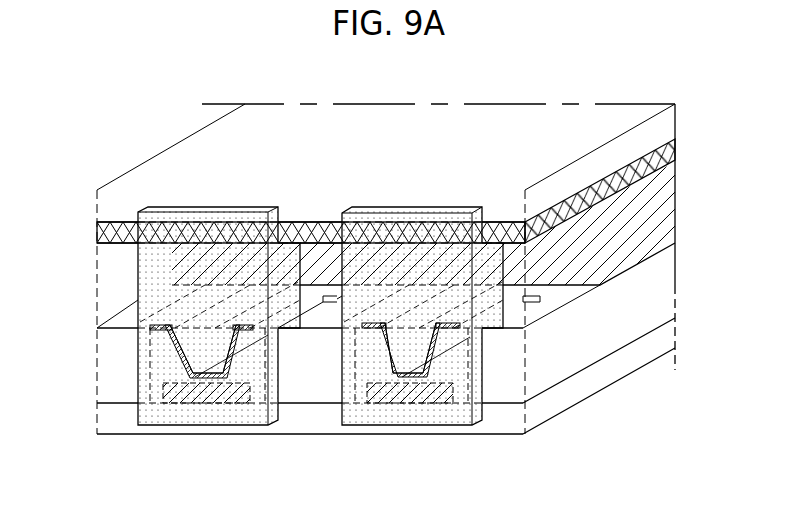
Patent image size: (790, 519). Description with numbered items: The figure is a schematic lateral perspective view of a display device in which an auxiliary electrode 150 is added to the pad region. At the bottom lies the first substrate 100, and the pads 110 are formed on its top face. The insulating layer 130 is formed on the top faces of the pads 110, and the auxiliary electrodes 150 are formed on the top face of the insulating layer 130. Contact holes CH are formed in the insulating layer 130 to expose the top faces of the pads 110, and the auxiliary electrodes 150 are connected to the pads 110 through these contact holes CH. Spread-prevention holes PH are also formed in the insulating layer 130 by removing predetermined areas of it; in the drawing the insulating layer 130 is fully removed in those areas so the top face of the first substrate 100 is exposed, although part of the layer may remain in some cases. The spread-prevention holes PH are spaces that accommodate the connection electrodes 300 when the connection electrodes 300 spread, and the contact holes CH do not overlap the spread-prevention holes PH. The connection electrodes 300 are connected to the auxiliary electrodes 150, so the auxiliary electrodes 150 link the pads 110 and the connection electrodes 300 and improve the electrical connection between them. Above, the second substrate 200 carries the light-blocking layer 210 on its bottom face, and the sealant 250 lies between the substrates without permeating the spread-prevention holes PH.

The first substrate 100 is at (662, 347).
The pads 110 is at (398, 393).
The insulating layer 130 is at (662, 273).
The auxiliary electrode 150 is at (436, 362).
The second substrate 200 is at (662, 125).
The light-blocking layer 210 is at (675, 153).
The sealant 250 is at (662, 206).
The connection electrodes 300 is at (150, 263).
The contact holes CH is at (182, 344).
The spread-prevention holes PH is at (272, 360).